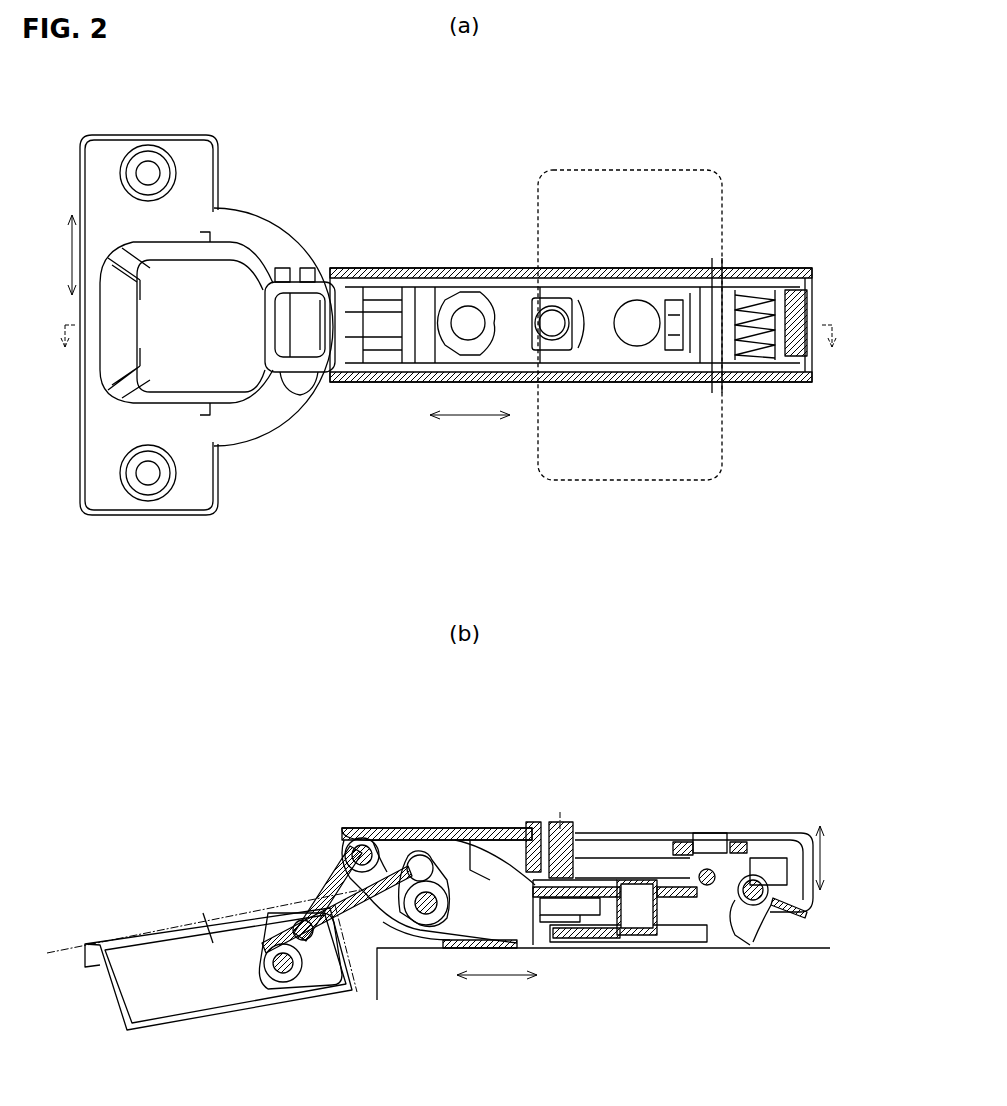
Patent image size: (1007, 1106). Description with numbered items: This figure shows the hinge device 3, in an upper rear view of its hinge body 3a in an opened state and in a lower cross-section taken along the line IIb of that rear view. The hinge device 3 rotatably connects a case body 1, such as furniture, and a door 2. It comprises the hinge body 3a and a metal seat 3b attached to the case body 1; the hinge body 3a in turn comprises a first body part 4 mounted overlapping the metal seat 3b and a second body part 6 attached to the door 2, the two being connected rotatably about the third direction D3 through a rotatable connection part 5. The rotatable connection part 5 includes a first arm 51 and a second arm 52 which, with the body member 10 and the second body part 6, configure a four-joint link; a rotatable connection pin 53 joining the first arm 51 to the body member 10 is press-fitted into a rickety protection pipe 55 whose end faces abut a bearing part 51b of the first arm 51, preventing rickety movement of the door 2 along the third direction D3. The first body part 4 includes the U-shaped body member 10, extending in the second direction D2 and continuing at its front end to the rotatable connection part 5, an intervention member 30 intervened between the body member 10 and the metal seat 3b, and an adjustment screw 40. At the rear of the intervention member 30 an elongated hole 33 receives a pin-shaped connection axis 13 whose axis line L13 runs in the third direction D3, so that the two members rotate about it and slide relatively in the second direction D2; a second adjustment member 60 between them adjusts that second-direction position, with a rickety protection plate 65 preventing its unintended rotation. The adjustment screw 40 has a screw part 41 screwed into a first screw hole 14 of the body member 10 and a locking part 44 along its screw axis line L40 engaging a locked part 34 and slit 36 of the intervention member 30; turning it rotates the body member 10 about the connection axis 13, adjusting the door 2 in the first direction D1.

The case body 1 is at (800, 947).
The door 2 is at (302, 1000).
The hinge device 3 is at (277, 745).
The hinge body 3a is at (360, 185).
The metal seat 3b is at (723, 200).
The first body part 4 is at (462, 262).
The rotatable connection part 5 is at (383, 346).
The second body part 6 is at (120, 135).
The body member 10 is at (400, 268).
The connection axis 13 is at (695, 348).
The first screw hole 14 is at (530, 830).
The intervention member 30 is at (538, 385).
The elongated hole 33 is at (742, 930).
The locked part 34 is at (489, 828).
The slit 36 is at (615, 875).
The adjustment screw 40 is at (558, 290).
The screw part 41 is at (578, 832).
The locking part 44 is at (548, 876).
The first arm 51 is at (300, 905).
The bearing part 51b is at (396, 838).
The second arm 52 is at (325, 895).
The rotatable connection pin 53 is at (355, 838).
The rickety protection pipe 55 is at (363, 840).
The second adjustment member 60 is at (700, 833).
The rickety protection plate 65 is at (752, 842).
The axis line of the connection axis L13 is at (740, 345).
The screw axis line L40 is at (578, 791).
The first direction D1 is at (833, 858).
The second direction D2 is at (483, 701).
The third direction D3 is at (60, 255).
The section line IIb is at (450, 351).